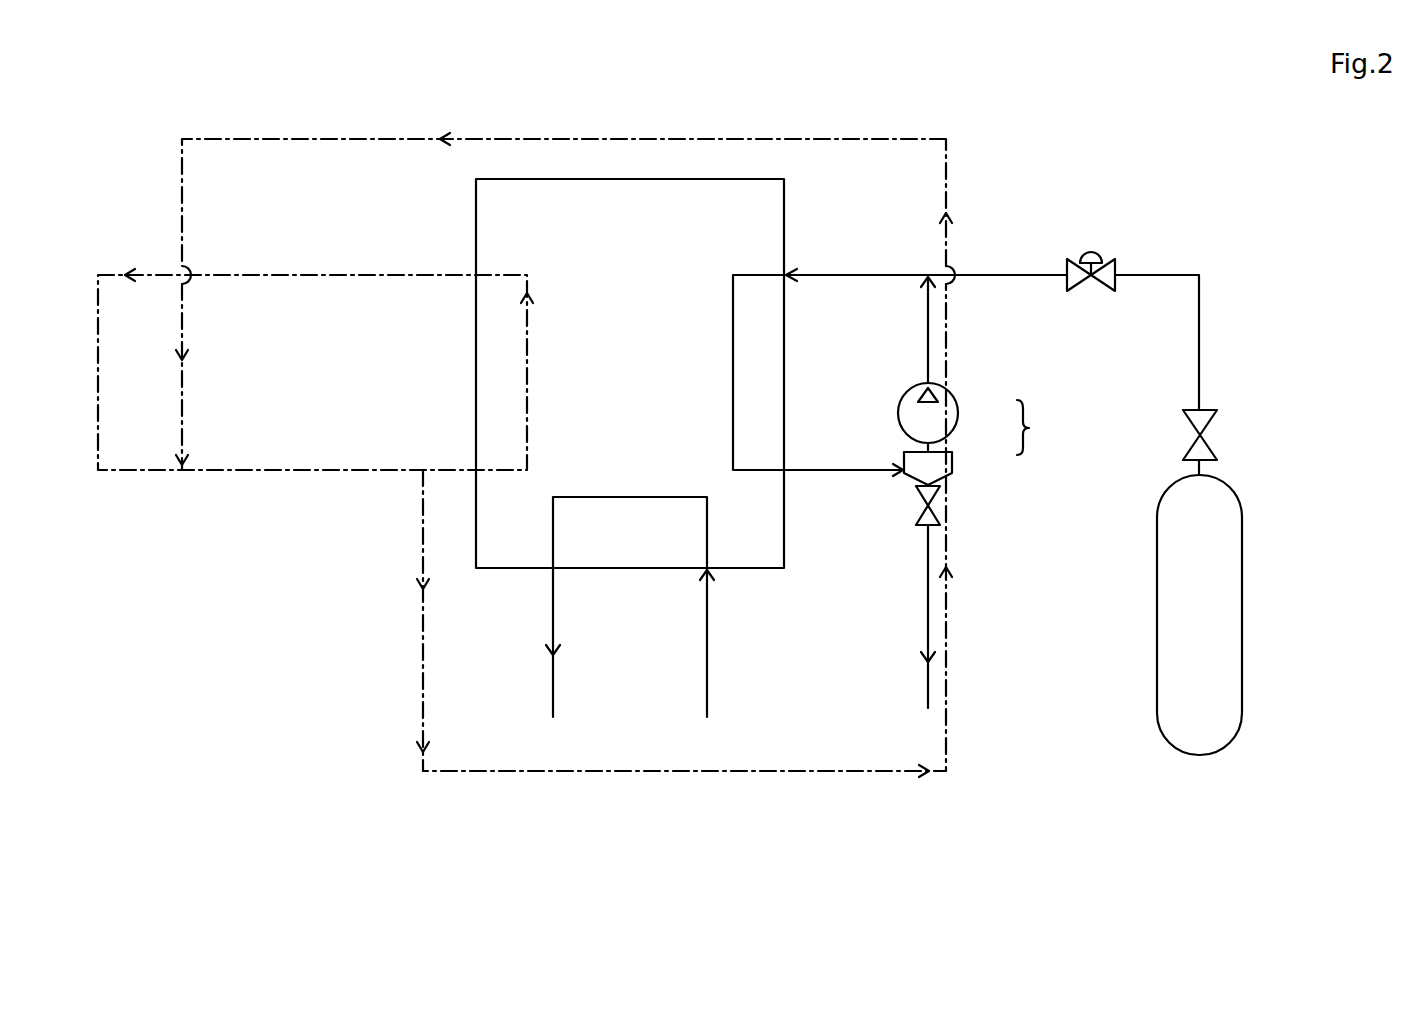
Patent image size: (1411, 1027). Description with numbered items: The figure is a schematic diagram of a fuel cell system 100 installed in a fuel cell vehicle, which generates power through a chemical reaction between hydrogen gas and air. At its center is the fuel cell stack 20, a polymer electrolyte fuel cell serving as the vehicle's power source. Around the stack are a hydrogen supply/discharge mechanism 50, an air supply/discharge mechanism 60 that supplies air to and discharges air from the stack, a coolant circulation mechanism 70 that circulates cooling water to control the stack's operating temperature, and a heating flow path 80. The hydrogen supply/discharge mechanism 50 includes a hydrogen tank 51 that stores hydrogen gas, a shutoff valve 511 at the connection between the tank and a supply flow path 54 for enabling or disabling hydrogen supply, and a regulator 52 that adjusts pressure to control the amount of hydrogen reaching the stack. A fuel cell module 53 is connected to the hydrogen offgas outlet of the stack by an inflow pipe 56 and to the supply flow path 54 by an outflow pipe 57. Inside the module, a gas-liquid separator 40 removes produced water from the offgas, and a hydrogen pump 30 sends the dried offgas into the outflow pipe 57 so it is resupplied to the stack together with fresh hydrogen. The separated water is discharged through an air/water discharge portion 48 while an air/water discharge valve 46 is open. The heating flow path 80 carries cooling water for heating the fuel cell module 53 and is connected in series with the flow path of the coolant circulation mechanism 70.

The fuel cell system 100 is at (1176, 187).
The coolant circulation mechanism 70 is at (286, 250).
The fuel cell stack 20 is at (784, 238).
The air supply/discharge mechanism 60 is at (553, 615).
The supply flow path 54 is at (810, 277).
The hydrogen supply/discharge mechanism 50 is at (1023, 240).
The regulator 52 is at (1113, 262).
The shutoff valve 511 is at (1217, 418).
The hydrogen tank 51 is at (1228, 745).
The outflow pipe 57 is at (928, 313).
The hydrogen pump 30 is at (953, 388).
The gas-liquid separator 40 is at (952, 462).
The fuel cell module 53 is at (1042, 427).
The inflow pipe 56 is at (818, 470).
The air/water discharge valve 46 is at (916, 518).
The air/water discharge portion 48 is at (928, 627).
The heating flow path 80 is at (688, 772).